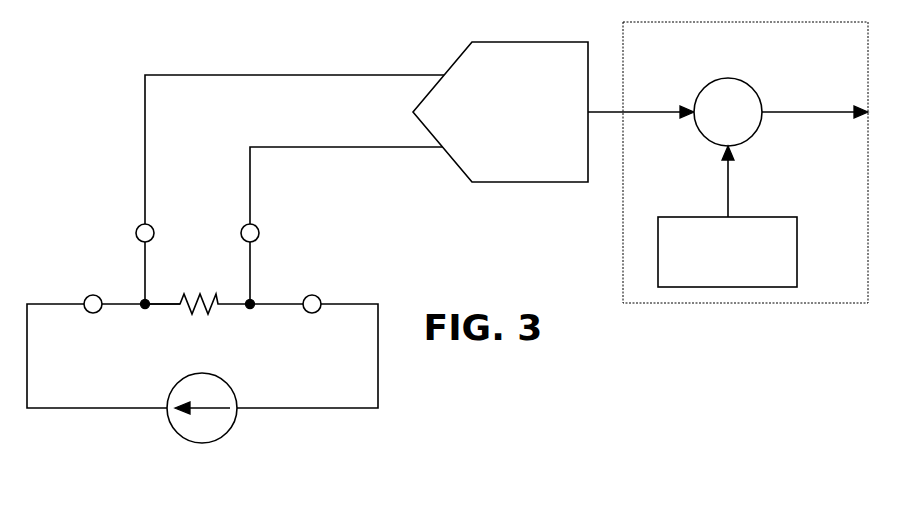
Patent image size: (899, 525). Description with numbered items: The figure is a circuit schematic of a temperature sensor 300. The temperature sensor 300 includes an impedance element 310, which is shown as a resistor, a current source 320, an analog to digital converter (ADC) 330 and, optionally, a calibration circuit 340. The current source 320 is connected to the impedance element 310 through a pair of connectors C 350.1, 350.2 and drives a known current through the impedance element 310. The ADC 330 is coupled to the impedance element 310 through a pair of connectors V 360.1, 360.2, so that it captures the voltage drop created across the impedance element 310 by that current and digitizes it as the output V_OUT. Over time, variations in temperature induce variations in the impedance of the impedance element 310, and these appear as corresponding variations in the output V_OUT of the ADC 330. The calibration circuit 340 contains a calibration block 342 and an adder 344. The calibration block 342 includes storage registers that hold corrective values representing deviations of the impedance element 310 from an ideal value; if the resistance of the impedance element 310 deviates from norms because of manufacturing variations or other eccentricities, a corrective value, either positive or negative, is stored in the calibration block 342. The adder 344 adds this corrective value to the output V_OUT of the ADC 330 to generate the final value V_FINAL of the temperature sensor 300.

The temperature sensor 300 is at (264, 356).
The impedance element 310 is at (203, 296).
The current source 320 is at (200, 443).
The analog to digital converter (ADC) 330 is at (553, 112).
The calibration circuit 340 is at (745, 162).
The calibration block 342 is at (727, 216).
The adder 344 is at (763, 128).
The connector C 350.1 is at (90, 314).
The connector C 350.2 is at (309, 314).
The connector V 360.1 is at (136, 232).
The connector V 360.2 is at (259, 231).